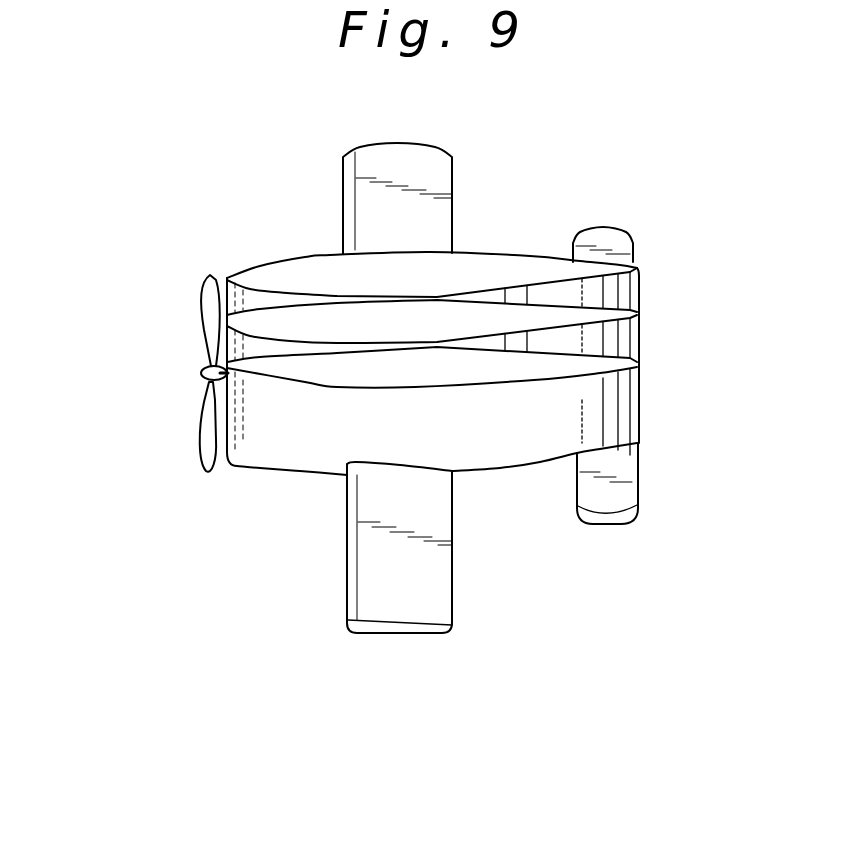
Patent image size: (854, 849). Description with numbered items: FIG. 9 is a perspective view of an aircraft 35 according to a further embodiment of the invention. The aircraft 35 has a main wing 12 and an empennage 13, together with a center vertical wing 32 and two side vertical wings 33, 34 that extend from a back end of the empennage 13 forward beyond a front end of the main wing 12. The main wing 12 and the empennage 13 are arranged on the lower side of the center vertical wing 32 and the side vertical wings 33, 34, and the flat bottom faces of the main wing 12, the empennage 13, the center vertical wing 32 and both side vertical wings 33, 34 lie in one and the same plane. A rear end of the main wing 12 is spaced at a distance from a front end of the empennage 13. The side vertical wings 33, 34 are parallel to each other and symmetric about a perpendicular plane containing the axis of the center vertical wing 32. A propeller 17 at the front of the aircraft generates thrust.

The main wing 12 is at (438, 587).
The empennage 13 is at (627, 483).
The propeller 17 is at (198, 330).
The center vertical wing 32 is at (270, 318).
The side vertical wing 33 is at (283, 453).
The side vertical wing 34 is at (305, 272).
The aircraft 35 is at (571, 198).